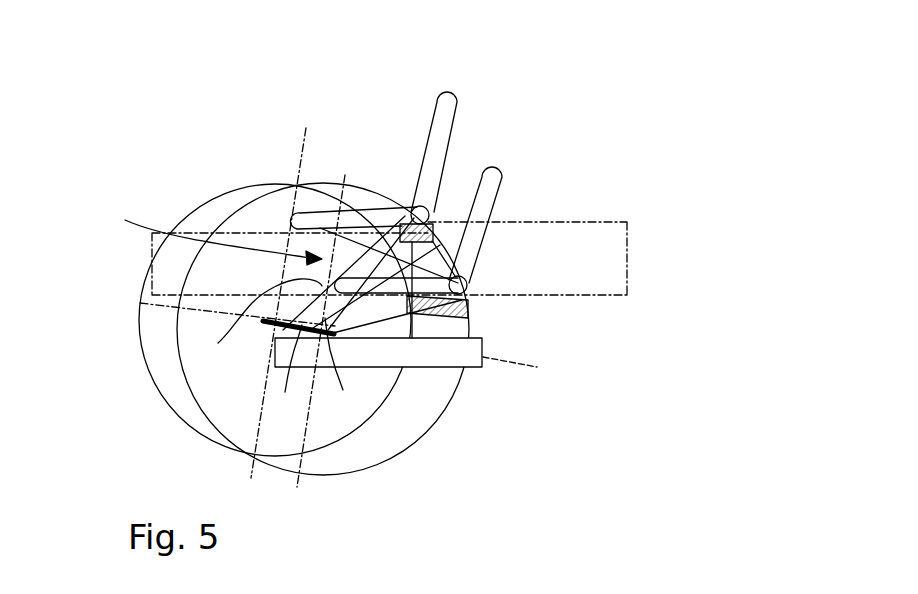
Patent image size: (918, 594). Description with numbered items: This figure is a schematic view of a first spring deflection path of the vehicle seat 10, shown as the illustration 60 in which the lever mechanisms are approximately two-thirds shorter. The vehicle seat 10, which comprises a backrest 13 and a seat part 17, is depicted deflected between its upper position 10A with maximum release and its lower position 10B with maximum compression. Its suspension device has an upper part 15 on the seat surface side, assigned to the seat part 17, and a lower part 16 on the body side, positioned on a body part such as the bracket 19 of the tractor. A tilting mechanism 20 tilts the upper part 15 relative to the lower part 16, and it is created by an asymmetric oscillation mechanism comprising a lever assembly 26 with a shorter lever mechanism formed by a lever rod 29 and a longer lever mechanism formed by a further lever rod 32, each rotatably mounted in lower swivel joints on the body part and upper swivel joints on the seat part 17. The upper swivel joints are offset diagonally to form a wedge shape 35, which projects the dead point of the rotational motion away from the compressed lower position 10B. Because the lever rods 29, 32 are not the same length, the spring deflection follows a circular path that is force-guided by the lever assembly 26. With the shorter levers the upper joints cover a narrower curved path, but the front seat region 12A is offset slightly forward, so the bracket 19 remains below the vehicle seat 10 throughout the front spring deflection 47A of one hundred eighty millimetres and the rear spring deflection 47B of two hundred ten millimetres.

The vehicle seat 10 is at (500, 95).
The illustration 60 is at (603, 94).
The backrest 13 is at (443, 94).
The upper position 10A is at (478, 150).
The lower position 10B is at (648, 272).
The upper part 15 is at (400, 207).
The front seat region 12A is at (291, 289).
The seat part 17 is at (298, 222).
The tilting mechanism 20 is at (188, 191).
The lever assembly 26 is at (206, 237).
The front spring deflection 47A is at (175, 270).
The rear spring deflection 47B is at (607, 250).
The wedge shape 35 is at (470, 303).
The bracket 19 is at (467, 357).
The lever rod 29 is at (254, 321).
The further lever rod 32 is at (284, 377).
The lower part 16 is at (341, 373).